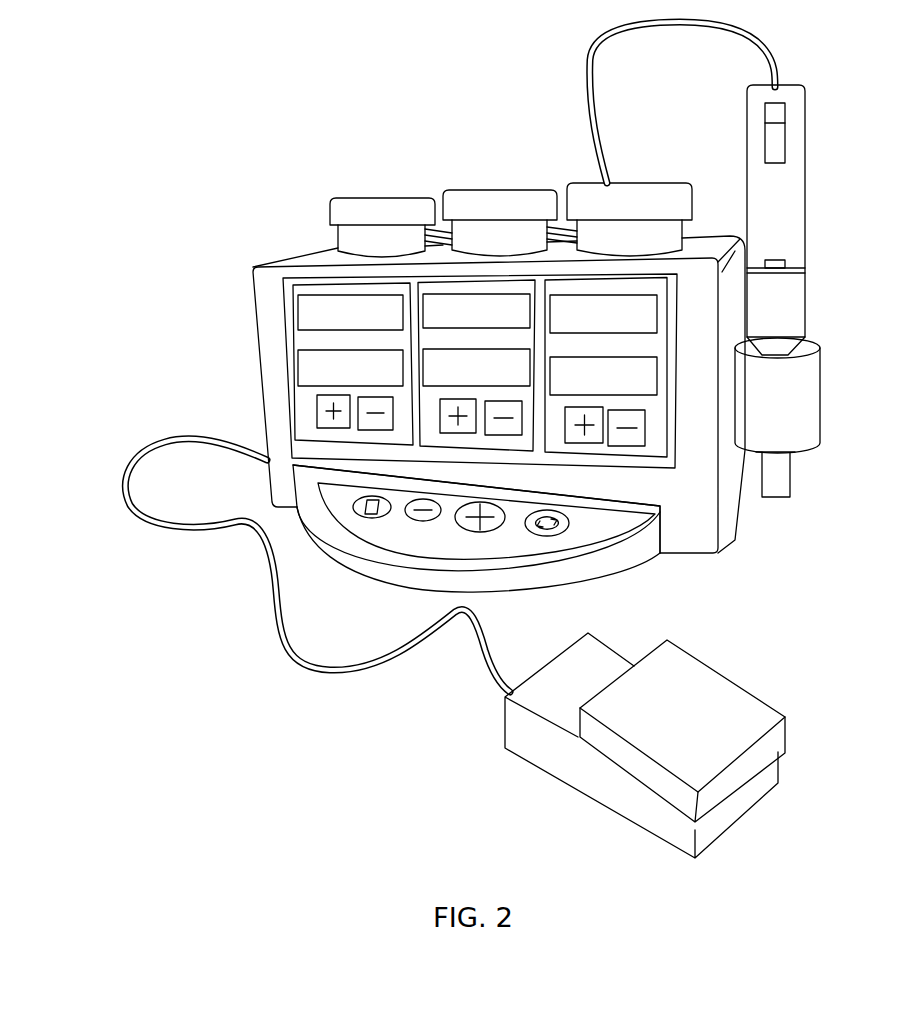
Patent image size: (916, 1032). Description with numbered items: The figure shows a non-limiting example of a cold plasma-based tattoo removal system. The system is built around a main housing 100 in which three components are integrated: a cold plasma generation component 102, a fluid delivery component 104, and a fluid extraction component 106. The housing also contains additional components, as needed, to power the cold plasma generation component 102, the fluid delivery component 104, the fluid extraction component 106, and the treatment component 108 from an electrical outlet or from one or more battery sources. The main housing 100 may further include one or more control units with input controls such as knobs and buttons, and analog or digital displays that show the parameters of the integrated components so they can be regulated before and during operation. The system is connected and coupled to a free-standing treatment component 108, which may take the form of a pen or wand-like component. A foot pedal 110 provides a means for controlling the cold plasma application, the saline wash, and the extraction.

The main housing 100 is at (207, 363).
The cold plasma generation component 102 is at (342, 197).
The fluid delivery component 104 is at (482, 190).
The fluid extraction component 106 is at (583, 183).
The treatment component 108 is at (798, 250).
The foot pedal 110 is at (753, 703).